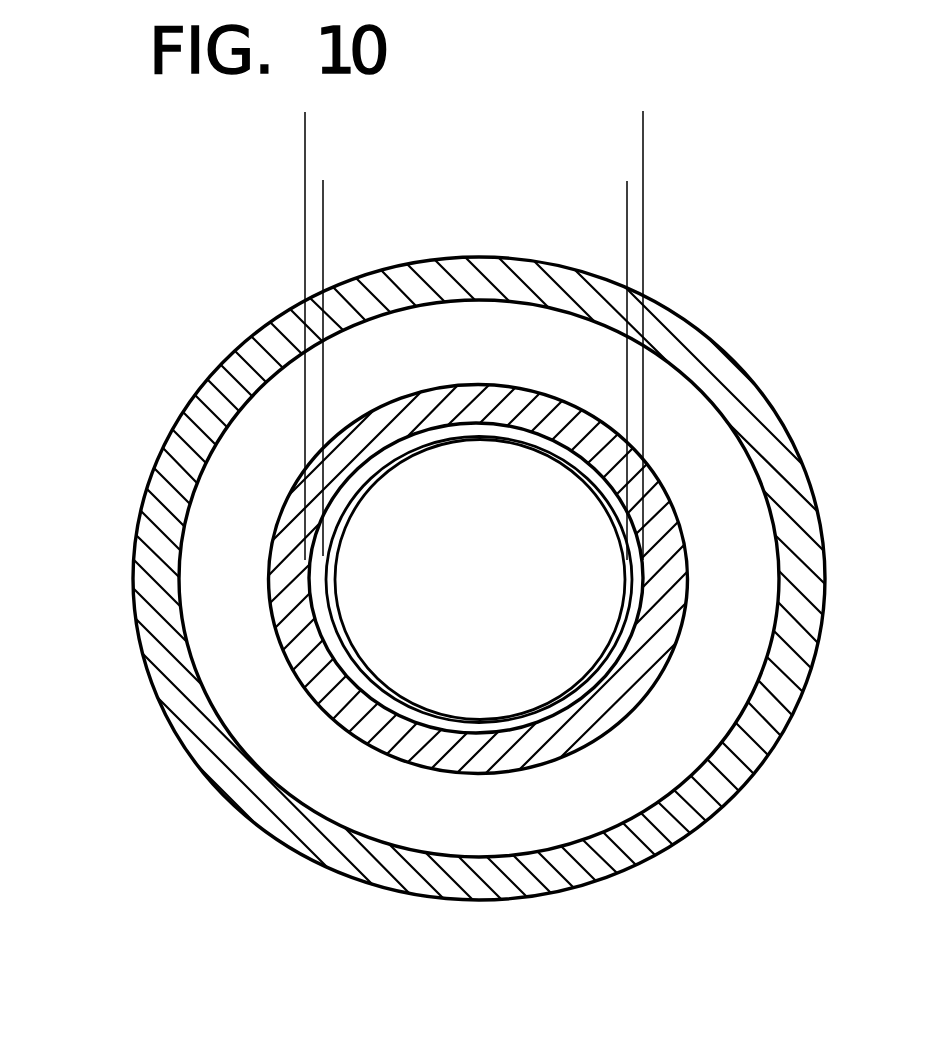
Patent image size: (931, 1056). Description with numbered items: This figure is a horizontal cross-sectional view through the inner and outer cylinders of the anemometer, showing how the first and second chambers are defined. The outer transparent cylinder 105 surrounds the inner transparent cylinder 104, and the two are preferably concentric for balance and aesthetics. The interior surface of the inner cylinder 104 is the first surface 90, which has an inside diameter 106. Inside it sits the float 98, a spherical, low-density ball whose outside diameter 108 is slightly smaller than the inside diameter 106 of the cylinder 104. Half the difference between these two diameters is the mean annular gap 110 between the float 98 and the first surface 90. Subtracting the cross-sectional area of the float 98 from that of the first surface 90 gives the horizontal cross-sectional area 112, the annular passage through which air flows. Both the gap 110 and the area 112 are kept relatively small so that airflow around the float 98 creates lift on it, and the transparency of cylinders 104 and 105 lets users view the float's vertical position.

The first surface 90 is at (352, 662).
The float 98 is at (360, 610).
The cylinder 104 is at (343, 710).
The cylinder 105 is at (287, 830).
The inside diameter 106 is at (643, 126).
The outside diameter 108 is at (627, 190).
The mean annular gap 110 is at (643, 190).
The horizontal cross-sectional area 112 is at (376, 708).